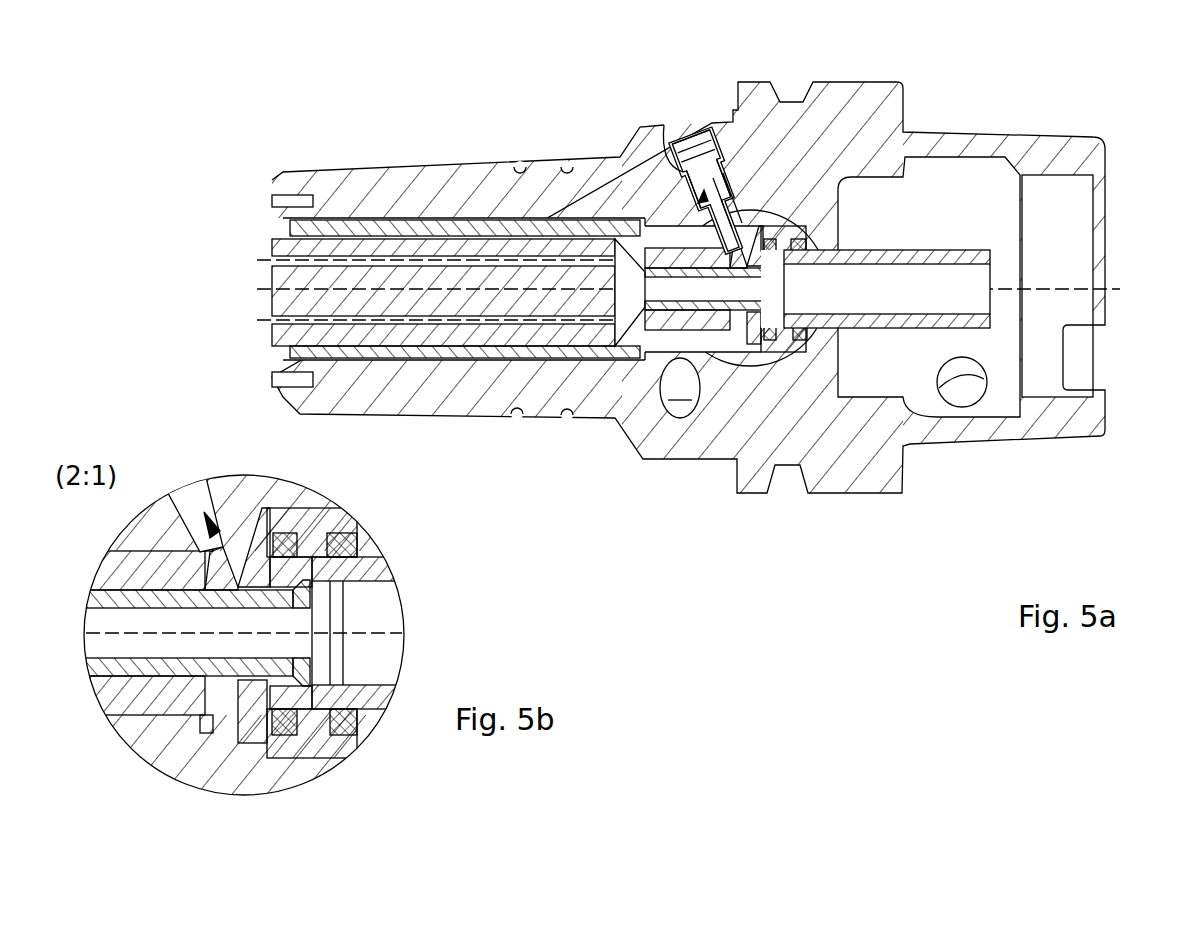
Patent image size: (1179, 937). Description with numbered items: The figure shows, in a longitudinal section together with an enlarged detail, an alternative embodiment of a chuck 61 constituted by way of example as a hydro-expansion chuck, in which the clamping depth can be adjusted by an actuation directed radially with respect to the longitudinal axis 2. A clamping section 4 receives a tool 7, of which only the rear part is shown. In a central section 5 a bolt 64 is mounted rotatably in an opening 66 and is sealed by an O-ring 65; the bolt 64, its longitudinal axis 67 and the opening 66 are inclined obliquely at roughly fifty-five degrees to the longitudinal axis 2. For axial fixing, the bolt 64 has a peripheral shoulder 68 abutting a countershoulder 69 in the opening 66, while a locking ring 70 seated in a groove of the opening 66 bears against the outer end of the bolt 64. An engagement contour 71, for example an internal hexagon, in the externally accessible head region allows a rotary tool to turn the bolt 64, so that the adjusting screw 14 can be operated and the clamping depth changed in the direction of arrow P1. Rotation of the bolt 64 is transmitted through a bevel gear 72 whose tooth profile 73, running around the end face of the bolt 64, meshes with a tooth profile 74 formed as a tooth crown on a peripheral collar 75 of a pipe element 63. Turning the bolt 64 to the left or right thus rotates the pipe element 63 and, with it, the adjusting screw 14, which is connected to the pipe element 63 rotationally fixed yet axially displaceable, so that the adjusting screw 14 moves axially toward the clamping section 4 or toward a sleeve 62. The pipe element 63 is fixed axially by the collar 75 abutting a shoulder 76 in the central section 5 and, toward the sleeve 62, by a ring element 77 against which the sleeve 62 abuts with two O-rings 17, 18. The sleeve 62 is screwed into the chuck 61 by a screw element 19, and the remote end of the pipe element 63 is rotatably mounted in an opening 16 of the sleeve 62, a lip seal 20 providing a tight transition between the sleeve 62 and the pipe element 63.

In FIG. 5A, the longitudinal axis 2 is at (1078, 282).
In FIG. 5A, the clamping section 4 is at (477, 193).
In FIG. 5A, the central section 5 is at (839, 177).
In FIG. 5A, the tool 7 is at (393, 247).
In FIG. 5A, the adjusting screw 14 is at (628, 240).
In FIG. 5B, the adjusting screw 14 is at (135, 585).
In FIG. 5B, the opening 16 is at (383, 616).
In FIG. 5B, the O-ring 17 is at (320, 532).
In FIG. 5B, the O-ring 18 is at (350, 537).
In FIG. 5A, the screw element 19 is at (937, 243).
In FIG. 5B, the lip seal 20 is at (356, 666).
In FIG. 5A, the chuck 61 is at (540, 120).
In FIG. 5A, the sleeve 62 is at (990, 165).
In FIG. 5B, the sleeve 62 is at (357, 570).
In FIG. 5A, the pipe element 63 is at (648, 318).
In FIG. 5B, the pipe element 63 is at (205, 600).
In FIG. 5A, the bolt 64 is at (745, 222).
In FIG. 5B, the bolt 64 is at (227, 497).
In FIG. 5A, the O-ring 65 is at (725, 152).
In FIG. 5A, the opening 66 is at (765, 170).
In FIG. 5A, the longitudinal axis 67 is at (712, 152).
In FIG. 5A, the peripheral shoulder 68 is at (680, 150).
In FIG. 5A, the countershoulder 69 is at (705, 350).
In FIG. 5A, the locking ring 70 is at (672, 157).
In FIG. 5A, the engagement contour 71 is at (700, 125).
In FIG. 5B, the bevel gear 72 is at (213, 530).
In FIG. 5B, the tooth profile 73 is at (183, 525).
In FIG. 5B, the tooth profile 74 is at (260, 520).
In FIG. 5B, the peripheral collar 75 is at (295, 520).
In FIG. 5B, the shoulder 76 is at (205, 722).
In FIG. 5B, the ring element 77 is at (255, 745).
In FIG. 5A, the arrow P1 is at (655, 90).